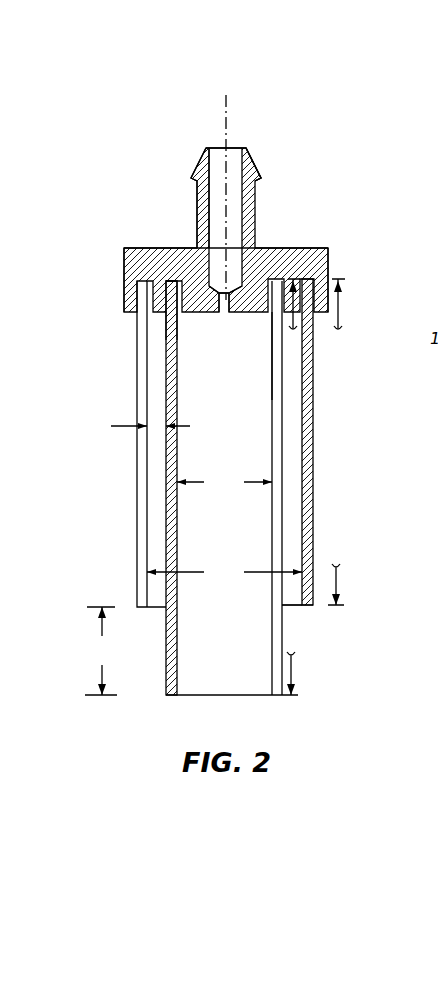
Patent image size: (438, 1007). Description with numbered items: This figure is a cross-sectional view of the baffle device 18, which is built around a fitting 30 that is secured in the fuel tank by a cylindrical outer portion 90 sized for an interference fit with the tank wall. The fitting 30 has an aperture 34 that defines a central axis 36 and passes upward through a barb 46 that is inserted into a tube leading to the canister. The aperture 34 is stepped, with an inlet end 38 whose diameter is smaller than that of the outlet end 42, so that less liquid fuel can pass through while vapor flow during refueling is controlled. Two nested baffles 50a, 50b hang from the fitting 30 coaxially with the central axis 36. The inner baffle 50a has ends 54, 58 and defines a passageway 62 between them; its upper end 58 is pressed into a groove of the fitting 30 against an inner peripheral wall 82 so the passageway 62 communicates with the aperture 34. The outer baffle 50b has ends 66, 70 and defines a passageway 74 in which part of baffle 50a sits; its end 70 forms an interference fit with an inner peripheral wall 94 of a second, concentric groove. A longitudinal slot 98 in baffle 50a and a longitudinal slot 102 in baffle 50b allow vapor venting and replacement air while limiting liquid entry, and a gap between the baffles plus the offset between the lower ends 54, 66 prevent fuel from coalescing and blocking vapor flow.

The baffle device 18 is at (360, 177).
The fitting 30 is at (290, 262).
The aperture 34 is at (206, 221).
The central axis 36 is at (229, 121).
The inlet end 38 is at (227, 313).
The outlet end 42 is at (216, 147).
The barb 46 is at (262, 178).
The baffle 50a is at (165, 458).
The baffle 50b is at (313, 447).
The end 54 is at (168, 698).
The end 58 is at (180, 312).
The passageway 62 is at (251, 527).
The end 66 is at (308, 607).
The end 70 is at (328, 262).
The passageway 74 is at (293, 378).
The inner peripheral wall 82 is at (178, 318).
The cylindrical outer portion 90 is at (124, 262).
The inner peripheral wall 94 is at (296, 330).
The longitudinal slot 98 is at (274, 540).
The longitudinal slot 102 is at (141, 507).